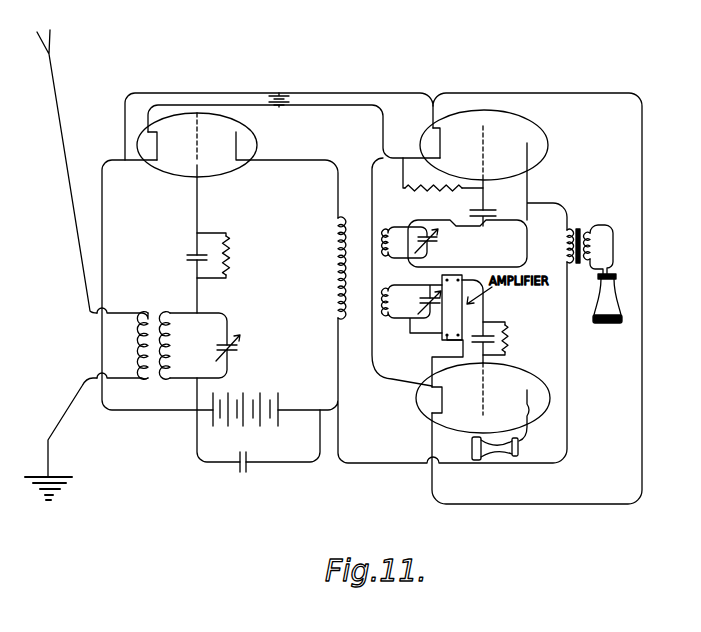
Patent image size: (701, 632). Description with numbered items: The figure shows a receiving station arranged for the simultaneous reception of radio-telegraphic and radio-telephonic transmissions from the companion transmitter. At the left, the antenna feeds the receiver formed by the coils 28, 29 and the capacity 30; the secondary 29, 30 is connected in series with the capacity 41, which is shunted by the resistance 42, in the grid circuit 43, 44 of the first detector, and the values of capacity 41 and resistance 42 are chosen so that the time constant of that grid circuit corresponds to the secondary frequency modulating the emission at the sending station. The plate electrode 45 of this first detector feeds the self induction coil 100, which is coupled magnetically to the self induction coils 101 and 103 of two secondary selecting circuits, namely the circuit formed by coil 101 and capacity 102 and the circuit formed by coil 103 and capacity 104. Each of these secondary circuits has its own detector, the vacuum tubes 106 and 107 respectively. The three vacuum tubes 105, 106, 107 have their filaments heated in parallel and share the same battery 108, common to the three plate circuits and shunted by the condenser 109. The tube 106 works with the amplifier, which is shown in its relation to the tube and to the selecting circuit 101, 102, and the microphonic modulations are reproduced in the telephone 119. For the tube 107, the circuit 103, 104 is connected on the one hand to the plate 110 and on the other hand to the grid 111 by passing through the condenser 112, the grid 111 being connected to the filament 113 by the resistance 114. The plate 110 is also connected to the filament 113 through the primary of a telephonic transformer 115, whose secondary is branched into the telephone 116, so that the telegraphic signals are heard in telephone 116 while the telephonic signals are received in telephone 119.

The coil 28 is at (122, 343).
The secondary coil 29 is at (193, 346).
The capacity 30 is at (237, 348).
The capacity 41 is at (182, 258).
The resistance 42 is at (223, 255).
The grid circuit element (filament side) 43 is at (163, 146).
The grid circuit element (grid) 44 is at (207, 137).
The plate of first vacuum tube 45 is at (287, 175).
The self induction coil 100 is at (321, 268).
The self induction coil 101 is at (412, 309).
The capacity of secondary selecting circuit 102 is at (426, 311).
The self induction coil 103 is at (404, 242).
The capacity of secondary selecting circuit 104 is at (442, 241).
The vacuum tube 105 is at (273, 115).
The vacuum tube 106 is at (483, 397).
The vacuum tube 107 is at (501, 145).
The battery 108 is at (245, 401).
The condenser 109 is at (244, 472).
The plate 110 is at (539, 180).
The grid 111 is at (484, 159).
The condenser 112 is at (498, 215).
The filament 113 is at (453, 143).
The resistance 114 is at (443, 184).
The telephonic transformer 115 is at (590, 238).
The telephone 116 is at (612, 292).
The telephone 119 is at (521, 449).